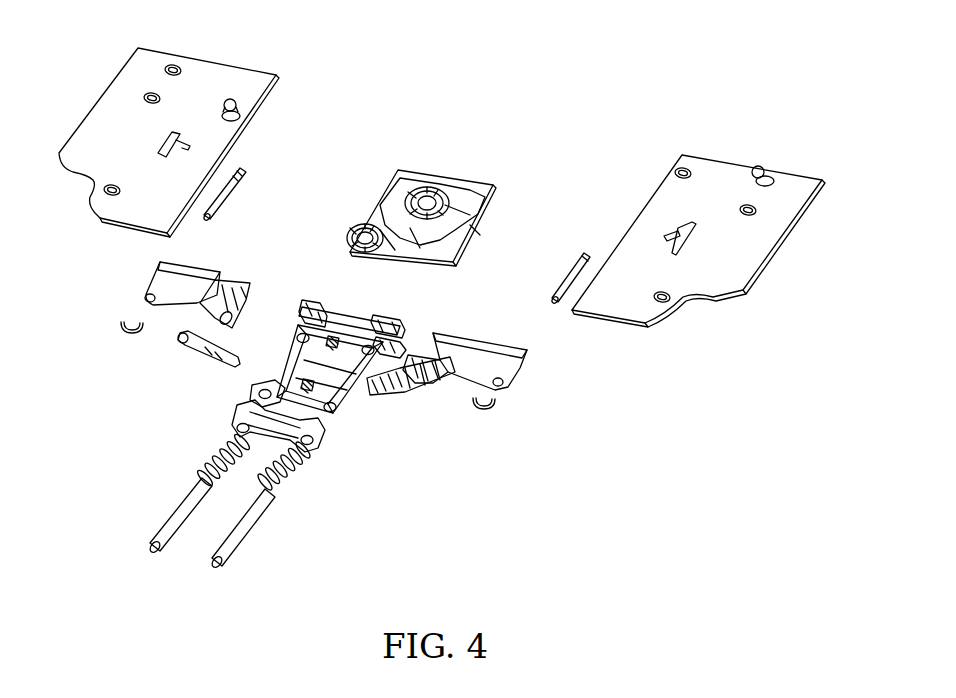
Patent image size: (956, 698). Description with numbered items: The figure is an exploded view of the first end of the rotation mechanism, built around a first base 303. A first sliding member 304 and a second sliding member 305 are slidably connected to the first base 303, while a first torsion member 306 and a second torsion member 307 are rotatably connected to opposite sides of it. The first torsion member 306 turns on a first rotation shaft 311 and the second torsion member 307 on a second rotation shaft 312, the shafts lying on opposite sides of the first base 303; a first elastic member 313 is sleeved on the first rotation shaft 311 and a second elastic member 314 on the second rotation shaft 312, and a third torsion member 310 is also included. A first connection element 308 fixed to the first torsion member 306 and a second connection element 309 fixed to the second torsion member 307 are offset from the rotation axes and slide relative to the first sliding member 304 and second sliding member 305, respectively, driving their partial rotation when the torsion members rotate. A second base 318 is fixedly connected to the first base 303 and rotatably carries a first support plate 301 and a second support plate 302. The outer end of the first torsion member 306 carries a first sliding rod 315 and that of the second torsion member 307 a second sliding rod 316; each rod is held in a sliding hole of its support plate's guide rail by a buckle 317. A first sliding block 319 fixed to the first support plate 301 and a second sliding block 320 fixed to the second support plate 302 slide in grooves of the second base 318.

The first support plate 301 is at (213, 60).
The second support plate 302 is at (740, 162).
The first base 303 is at (362, 315).
The first sliding member 304 is at (178, 347).
The second sliding member 305 is at (403, 395).
The first torsion member 306 is at (151, 276).
The second torsion member 307 is at (525, 365).
The first connection element 308 is at (305, 312).
The second connection element 309 is at (402, 327).
The third torsion member 310 is at (238, 408).
The first rotation shaft 311 is at (177, 498).
The second rotation shaft 312 is at (253, 532).
The first elastic member 313 is at (210, 448).
The second elastic member 314 is at (297, 475).
The first sliding rod 315 is at (250, 170).
The second sliding rod 316 is at (588, 252).
The buckle 317 is at (120, 322).
The second base 318 is at (500, 183).
The first sliding block 319 is at (340, 240).
The second sliding block 320 is at (463, 233).